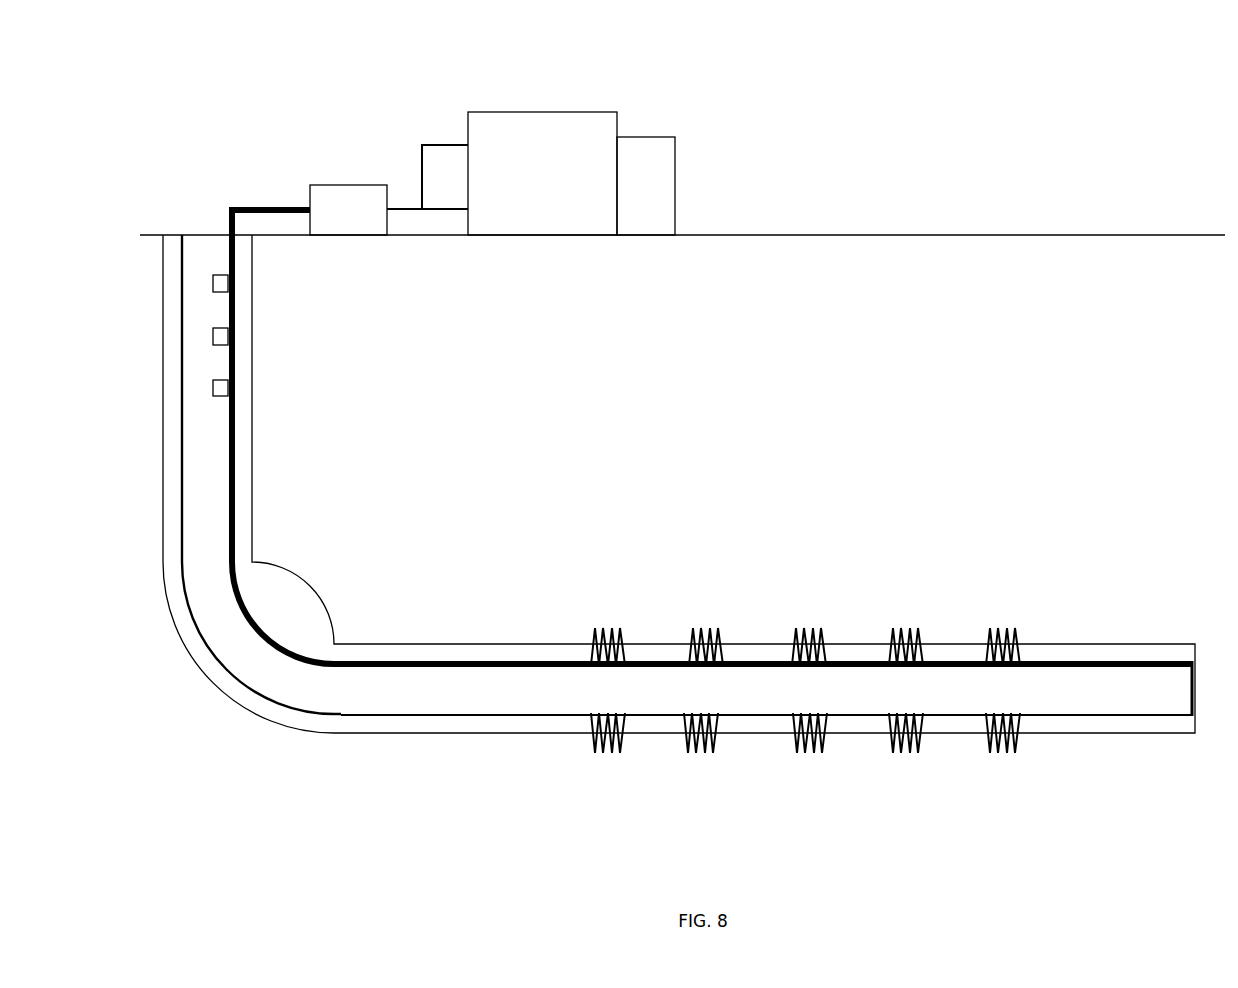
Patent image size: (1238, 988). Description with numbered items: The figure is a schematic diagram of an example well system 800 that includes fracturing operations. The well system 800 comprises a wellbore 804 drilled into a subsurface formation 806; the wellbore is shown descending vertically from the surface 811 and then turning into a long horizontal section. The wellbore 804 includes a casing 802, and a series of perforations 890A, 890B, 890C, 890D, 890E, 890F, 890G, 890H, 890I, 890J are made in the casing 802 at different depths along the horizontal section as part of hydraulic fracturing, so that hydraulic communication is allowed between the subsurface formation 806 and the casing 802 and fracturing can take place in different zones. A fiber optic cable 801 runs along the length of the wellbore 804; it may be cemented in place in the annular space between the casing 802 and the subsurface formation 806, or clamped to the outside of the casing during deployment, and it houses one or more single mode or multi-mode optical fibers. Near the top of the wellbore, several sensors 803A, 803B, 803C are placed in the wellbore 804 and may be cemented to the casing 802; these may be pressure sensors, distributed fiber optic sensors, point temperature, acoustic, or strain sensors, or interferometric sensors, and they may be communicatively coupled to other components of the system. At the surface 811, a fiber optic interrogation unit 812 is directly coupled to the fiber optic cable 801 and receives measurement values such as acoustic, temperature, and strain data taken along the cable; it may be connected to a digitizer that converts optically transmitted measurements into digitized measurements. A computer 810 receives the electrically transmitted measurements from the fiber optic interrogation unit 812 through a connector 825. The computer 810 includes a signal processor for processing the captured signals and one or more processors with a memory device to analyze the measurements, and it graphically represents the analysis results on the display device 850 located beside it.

The well system 800 is at (146, 97).
The fiber optic cable 801 is at (393, 663).
The casing 802 is at (340, 718).
The sensor 803A is at (229, 283).
The sensor 803B is at (230, 333).
The sensor 803C is at (230, 385).
The wellbore 804 is at (163, 393).
The subsurface formation 806 is at (448, 373).
The computer 810 is at (490, 112).
The surface 811 is at (903, 236).
The fiber optic interrogation unit 812 is at (348, 210).
The connector 825 is at (402, 208).
The display device 850 is at (645, 147).
The perforation 890A is at (605, 628).
The perforation 890B is at (600, 752).
The perforation 890C is at (692, 630).
The perforation 890D is at (693, 753).
The perforation 890E is at (795, 630).
The perforation 890F is at (803, 755).
The perforation 890G is at (907, 628).
The perforation 890H is at (898, 755).
The perforation 890I is at (1017, 628).
The perforation 890J is at (995, 755).